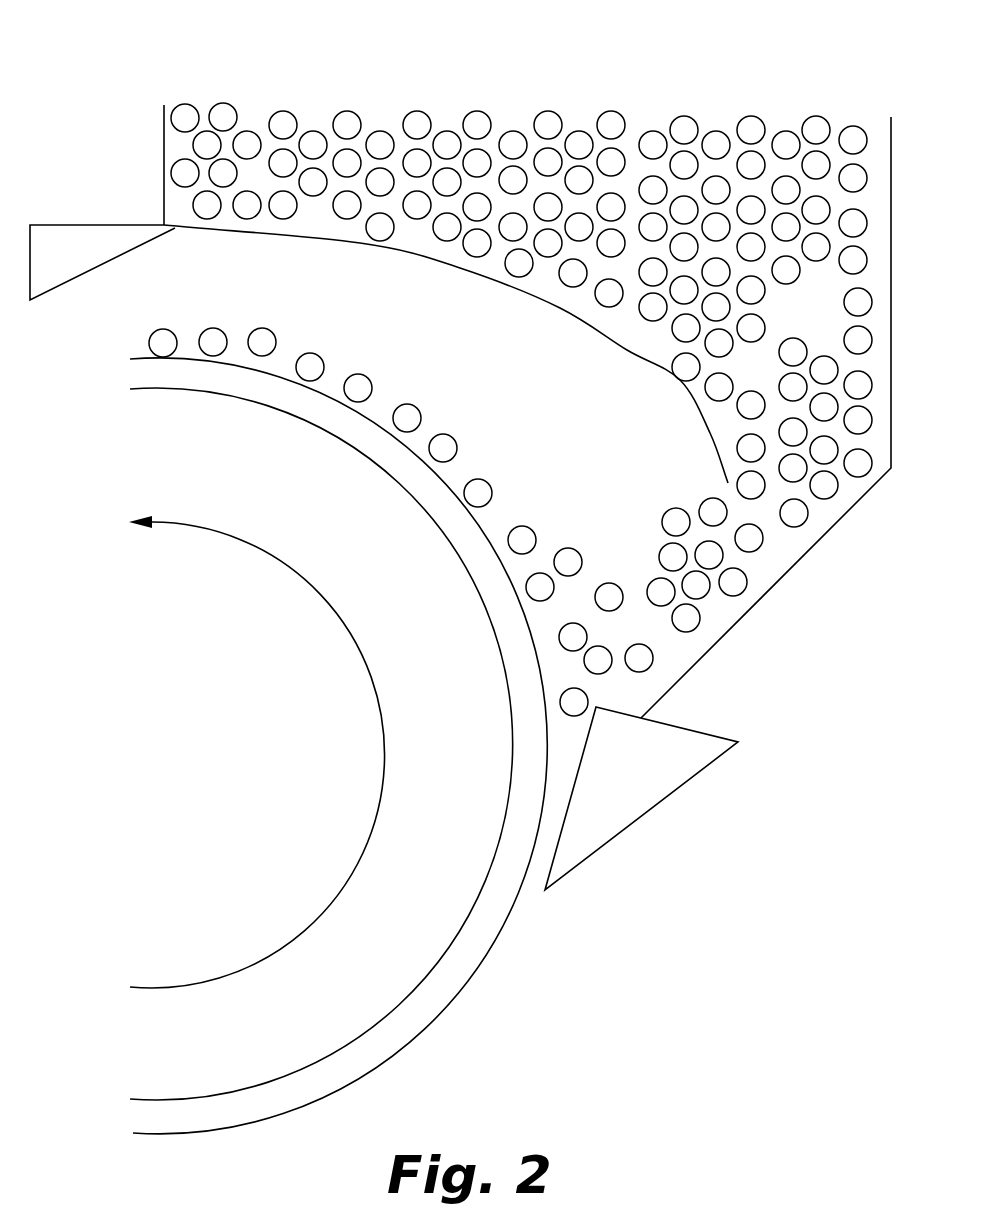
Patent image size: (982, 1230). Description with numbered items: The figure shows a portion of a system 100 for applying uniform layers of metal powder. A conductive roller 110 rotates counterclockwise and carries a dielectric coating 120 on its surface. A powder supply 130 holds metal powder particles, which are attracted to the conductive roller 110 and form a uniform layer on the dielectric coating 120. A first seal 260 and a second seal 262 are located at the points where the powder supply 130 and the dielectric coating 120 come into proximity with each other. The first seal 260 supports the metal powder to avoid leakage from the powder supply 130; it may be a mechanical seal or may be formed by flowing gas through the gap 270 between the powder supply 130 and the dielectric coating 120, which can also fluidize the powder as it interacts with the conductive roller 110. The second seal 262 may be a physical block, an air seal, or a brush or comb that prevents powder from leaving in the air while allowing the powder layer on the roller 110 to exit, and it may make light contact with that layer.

The system 100 is at (371, 98).
The conductive roller 110 is at (285, 702).
The dielectric coating 120 is at (467, 1003).
The powder supply 130 is at (830, 324).
The first seal 260 is at (643, 784).
The second seal 262 is at (90, 204).
The gap 270 is at (531, 913).